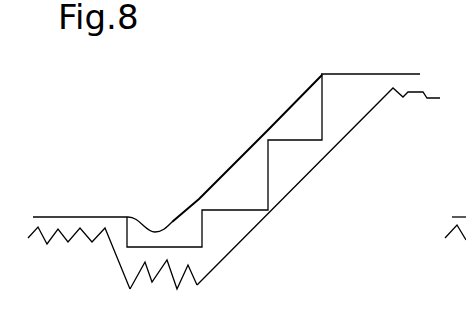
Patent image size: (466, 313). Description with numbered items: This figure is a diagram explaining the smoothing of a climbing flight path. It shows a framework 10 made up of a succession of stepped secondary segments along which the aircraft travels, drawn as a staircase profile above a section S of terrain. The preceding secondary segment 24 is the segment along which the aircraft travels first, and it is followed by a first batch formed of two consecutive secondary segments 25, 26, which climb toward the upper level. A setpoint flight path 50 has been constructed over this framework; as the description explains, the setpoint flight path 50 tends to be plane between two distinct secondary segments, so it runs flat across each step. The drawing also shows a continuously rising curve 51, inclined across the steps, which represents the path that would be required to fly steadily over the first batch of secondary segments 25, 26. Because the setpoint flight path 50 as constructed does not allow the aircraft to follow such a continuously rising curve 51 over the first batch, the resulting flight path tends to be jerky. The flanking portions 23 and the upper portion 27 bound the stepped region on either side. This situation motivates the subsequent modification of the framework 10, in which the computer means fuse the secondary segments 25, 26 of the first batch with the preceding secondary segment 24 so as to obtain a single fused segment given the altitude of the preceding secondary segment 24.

The framework 10 is at (283, 148).
The surface portion 23 is at (68, 217).
The secondary segment 24 is at (181, 247).
The secondary segment 25 is at (215, 205).
The secondary segment 26 is at (312, 140).
The upper surface 27 is at (379, 74).
The setpoint flight path 50 is at (350, 74).
The continuously rising curve 51 is at (205, 157).
The section S is at (387, 162).